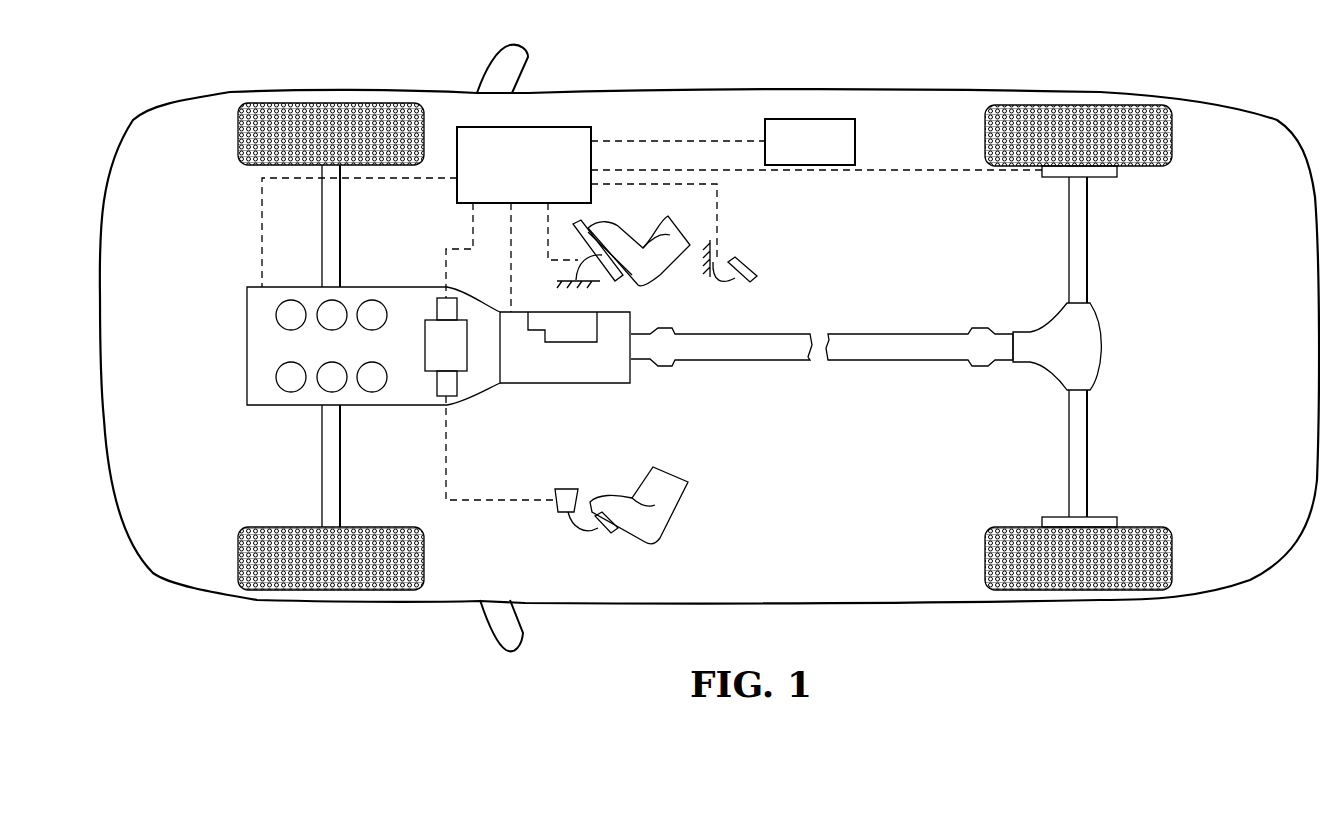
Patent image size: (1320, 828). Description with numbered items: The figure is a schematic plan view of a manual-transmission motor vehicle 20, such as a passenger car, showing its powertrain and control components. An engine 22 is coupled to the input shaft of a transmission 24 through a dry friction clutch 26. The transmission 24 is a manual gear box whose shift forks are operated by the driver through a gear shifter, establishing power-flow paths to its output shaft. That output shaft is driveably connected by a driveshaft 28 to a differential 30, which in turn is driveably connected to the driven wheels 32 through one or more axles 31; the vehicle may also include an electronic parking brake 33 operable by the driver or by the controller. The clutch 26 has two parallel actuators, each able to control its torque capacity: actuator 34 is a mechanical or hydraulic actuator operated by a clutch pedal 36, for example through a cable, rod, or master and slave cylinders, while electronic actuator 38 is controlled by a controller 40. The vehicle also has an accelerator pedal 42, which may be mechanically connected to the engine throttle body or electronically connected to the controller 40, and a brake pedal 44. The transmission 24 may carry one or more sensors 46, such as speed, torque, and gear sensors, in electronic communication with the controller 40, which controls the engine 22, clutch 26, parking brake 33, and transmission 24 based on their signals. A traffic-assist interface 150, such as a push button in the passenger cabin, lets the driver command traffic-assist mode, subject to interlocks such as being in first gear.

The motor vehicle 20 is at (750, 90).
The engine 22 is at (392, 287).
The transmission 24 is at (558, 383).
The dry friction clutch 26 is at (446, 345).
The driveshaft 28 is at (878, 364).
The differential 30 is at (1105, 347).
The axle 31 is at (1088, 284).
The driven wheels 32 is at (1172, 138).
The electronic parking brake 33 is at (1100, 177).
The actuator 34 is at (437, 388).
The clutch pedal 36 is at (594, 485).
The electronic actuator 38 is at (437, 308).
The controller 40 is at (527, 127).
The accelerator pedal 42 is at (610, 275).
The brake pedal 44 is at (733, 282).
The sensors 46 is at (572, 342).
The traffic-assist interface 150 is at (855, 140).